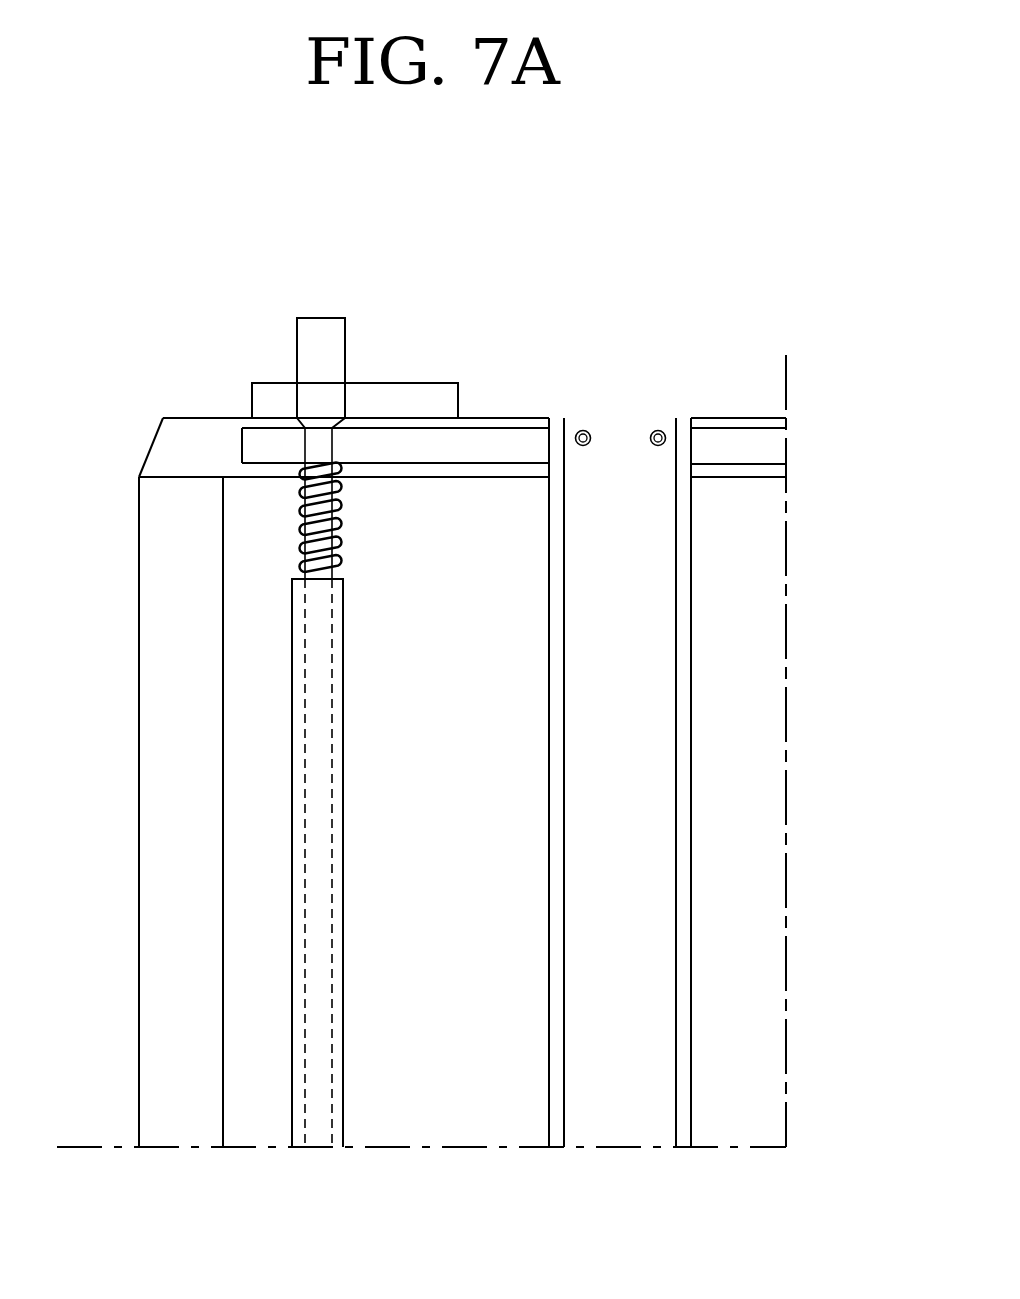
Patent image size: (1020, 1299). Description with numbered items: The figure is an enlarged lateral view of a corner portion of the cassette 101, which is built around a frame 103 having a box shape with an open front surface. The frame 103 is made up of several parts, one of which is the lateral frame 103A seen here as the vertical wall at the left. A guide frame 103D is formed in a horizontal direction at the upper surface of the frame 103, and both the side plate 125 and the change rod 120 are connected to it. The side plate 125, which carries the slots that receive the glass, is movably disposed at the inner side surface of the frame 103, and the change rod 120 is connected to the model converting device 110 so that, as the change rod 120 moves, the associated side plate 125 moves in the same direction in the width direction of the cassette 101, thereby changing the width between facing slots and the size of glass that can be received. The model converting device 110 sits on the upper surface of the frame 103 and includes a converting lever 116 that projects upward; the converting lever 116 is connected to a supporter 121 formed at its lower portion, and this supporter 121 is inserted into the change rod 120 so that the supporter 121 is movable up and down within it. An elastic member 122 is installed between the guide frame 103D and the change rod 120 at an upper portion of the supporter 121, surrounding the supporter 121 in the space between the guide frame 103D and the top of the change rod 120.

The cassette 101 is at (120, 443).
The frame 103 is at (173, 452).
The lateral frame 103A is at (180, 588).
The guide frame 103D is at (518, 445).
The model converting device 110 is at (409, 400).
The converting lever 116 is at (320, 338).
The change rod 120 is at (292, 835).
The supporter 121 is at (305, 716).
The elastic member 122 is at (300, 507).
The side plate 125 is at (635, 700).